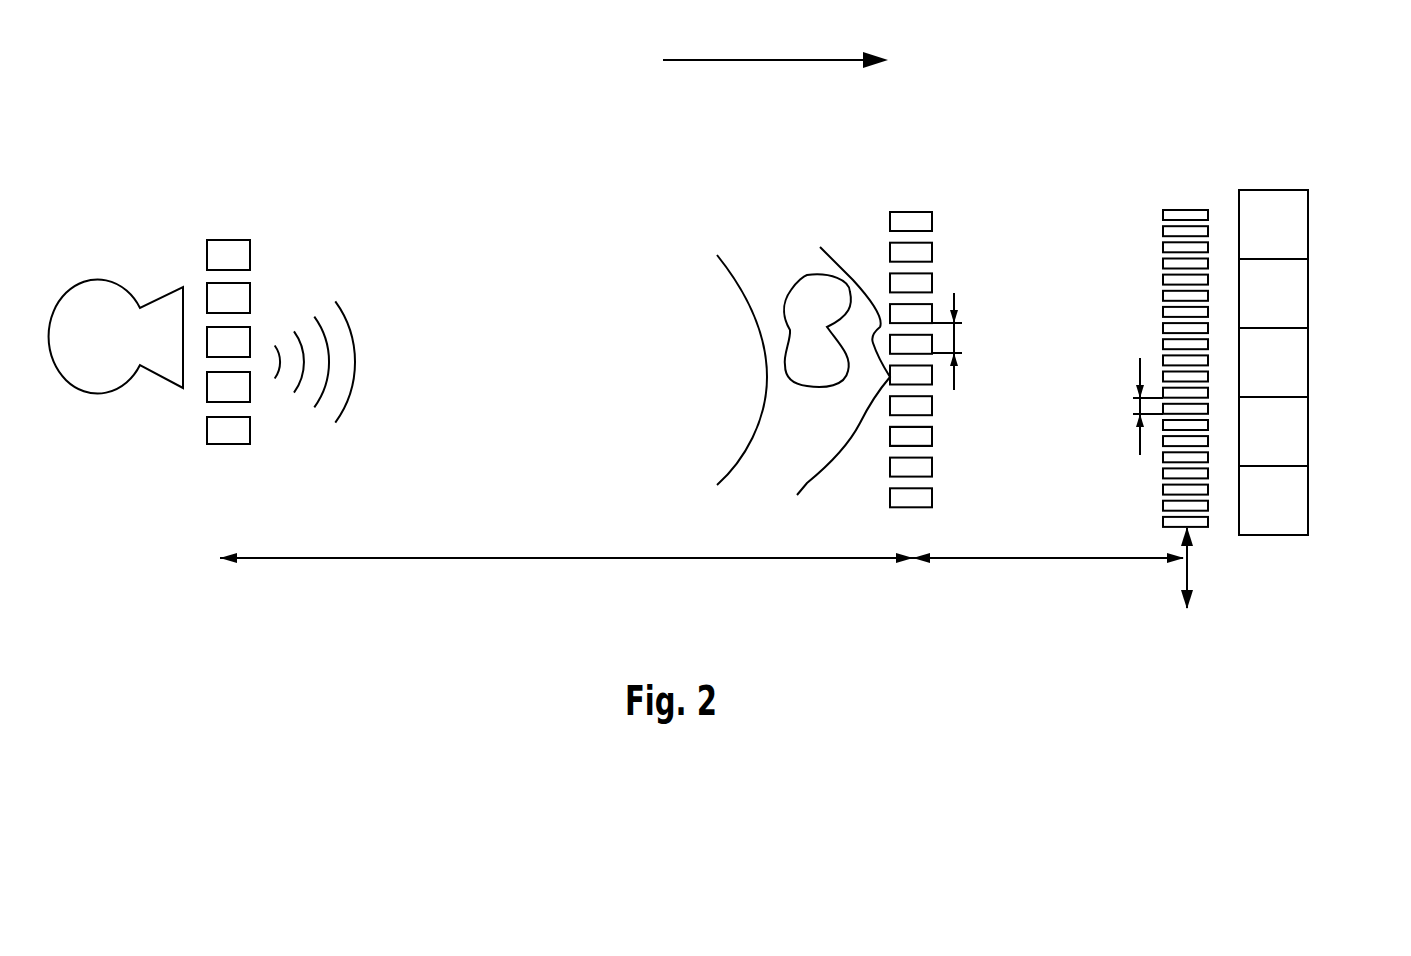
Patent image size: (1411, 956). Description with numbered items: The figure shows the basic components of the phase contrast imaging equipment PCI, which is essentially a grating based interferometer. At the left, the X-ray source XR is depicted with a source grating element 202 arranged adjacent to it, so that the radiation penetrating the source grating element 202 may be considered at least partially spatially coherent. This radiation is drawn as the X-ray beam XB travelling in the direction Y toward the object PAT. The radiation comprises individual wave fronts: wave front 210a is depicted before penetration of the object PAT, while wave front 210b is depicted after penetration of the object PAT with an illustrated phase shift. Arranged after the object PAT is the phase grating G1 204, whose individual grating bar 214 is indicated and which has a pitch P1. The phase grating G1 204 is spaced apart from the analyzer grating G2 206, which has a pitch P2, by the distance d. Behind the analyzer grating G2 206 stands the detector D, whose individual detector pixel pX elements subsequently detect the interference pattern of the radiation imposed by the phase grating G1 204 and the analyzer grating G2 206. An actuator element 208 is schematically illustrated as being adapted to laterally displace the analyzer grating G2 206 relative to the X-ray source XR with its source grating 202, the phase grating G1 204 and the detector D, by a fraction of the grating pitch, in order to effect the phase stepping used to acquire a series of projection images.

The source grating element 202 is at (222, 445).
The phase grating 204 is at (913, 212).
The analyzer grating 206 is at (1163, 217).
The actuator element 208 is at (1188, 577).
The wave front 210a is at (767, 373).
The wave front 210b is at (800, 495).
The grating bar of phase grating 214 is at (932, 437).
The phase contrast imaging equipment PCI is at (305, 133).
The X-ray source XR is at (102, 382).
The X-ray beam XB is at (356, 377).
The object PAT is at (812, 291).
The pitch of phase grating P1 is at (965, 341).
The pitch of analyzer grating P2 is at (1127, 406).
The phase grating G1 is at (913, 584).
The analyzer grating G2 is at (1203, 528).
The distance d is at (702, 576).
The detector D is at (1310, 535).
The detector pixel pX is at (1297, 232).
The optical axis direction Y is at (775, 44).